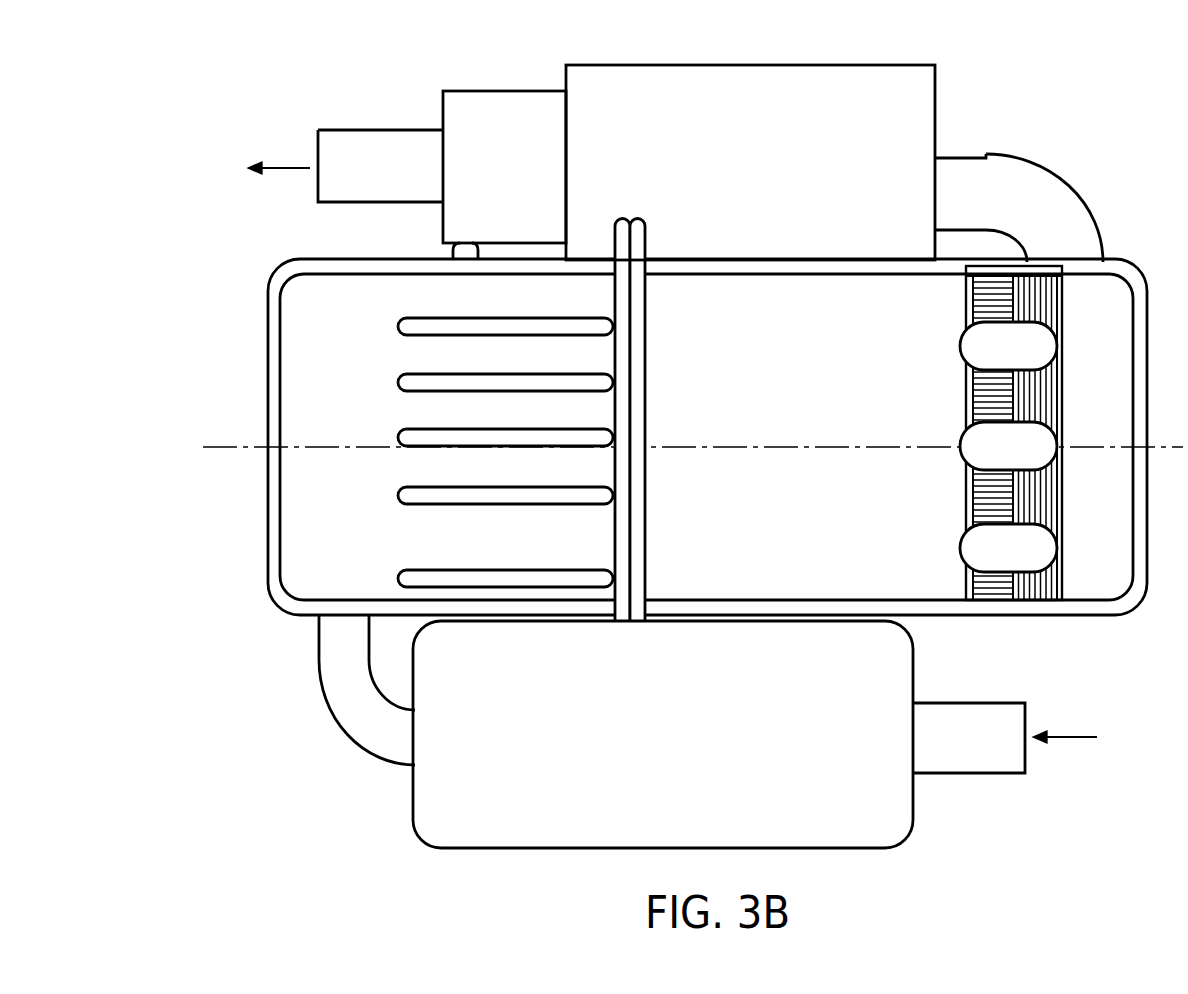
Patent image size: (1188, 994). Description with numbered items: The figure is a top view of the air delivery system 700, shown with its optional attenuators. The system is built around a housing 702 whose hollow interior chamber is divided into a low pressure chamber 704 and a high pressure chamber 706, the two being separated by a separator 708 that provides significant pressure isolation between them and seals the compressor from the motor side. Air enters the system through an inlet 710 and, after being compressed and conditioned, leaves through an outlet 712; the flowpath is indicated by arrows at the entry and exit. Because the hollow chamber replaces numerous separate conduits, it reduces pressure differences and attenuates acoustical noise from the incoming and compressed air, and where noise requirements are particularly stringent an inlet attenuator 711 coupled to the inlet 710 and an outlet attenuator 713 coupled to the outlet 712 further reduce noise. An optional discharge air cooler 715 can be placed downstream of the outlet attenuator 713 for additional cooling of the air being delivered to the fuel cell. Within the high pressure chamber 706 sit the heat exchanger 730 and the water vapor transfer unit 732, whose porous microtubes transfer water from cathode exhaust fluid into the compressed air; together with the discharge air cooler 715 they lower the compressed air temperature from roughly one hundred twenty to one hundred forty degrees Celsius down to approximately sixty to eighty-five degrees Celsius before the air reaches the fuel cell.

The air delivery system 700 is at (163, 155).
The housing 702 is at (267, 357).
The low pressure chamber 704 is at (372, 428).
The high pressure chamber 706 is at (808, 428).
The separator 708 is at (630, 220).
The inlet 710 is at (318, 637).
The inlet attenuator 711 is at (905, 797).
The outlet 712 is at (1082, 227).
The outlet attenuator 713 is at (936, 103).
The discharge air cooler 715 is at (503, 91).
The heat exchanger 730 is at (972, 299).
The water vapor transfer unit 732 is at (1050, 303).